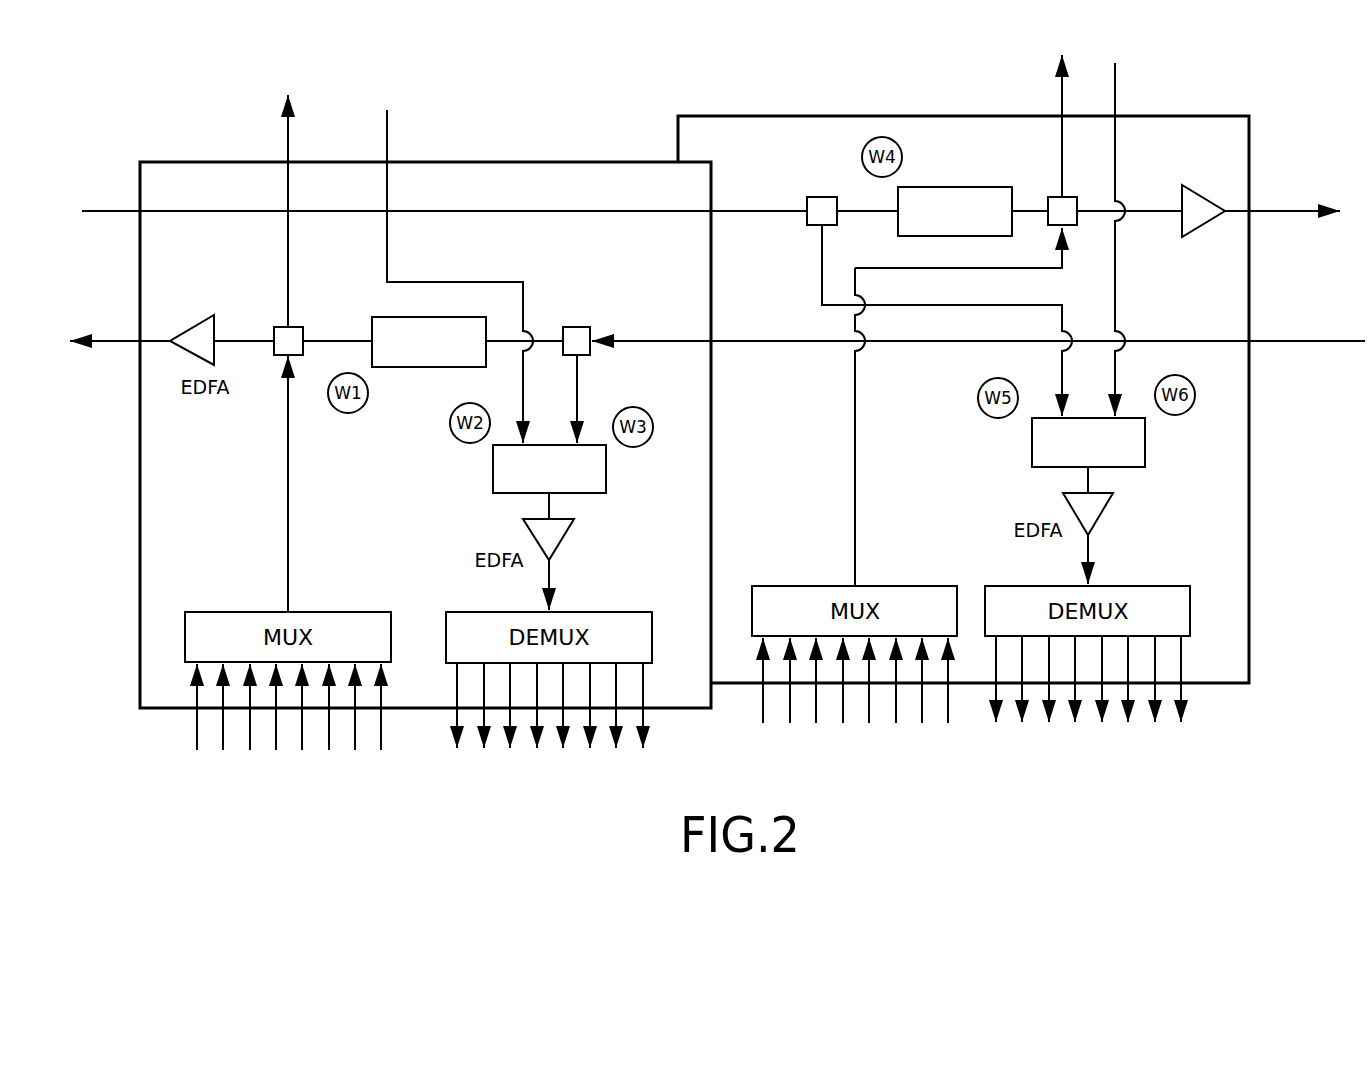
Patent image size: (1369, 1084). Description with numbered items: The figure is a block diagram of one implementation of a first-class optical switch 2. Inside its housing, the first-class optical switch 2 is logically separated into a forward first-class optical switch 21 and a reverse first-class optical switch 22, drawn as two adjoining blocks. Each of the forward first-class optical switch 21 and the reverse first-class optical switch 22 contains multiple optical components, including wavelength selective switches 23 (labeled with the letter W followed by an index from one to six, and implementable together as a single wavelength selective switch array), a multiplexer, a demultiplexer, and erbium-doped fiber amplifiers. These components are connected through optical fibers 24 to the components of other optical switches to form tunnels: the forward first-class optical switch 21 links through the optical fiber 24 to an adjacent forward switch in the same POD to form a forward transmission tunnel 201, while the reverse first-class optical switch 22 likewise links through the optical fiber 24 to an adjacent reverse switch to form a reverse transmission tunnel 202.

The first-class optical switch 2 is at (694, 370).
The forward first-class optical switch 21 is at (778, 130).
The reverse first-class optical switch 22 is at (505, 173).
The wavelength selective switch 23 is at (398, 367).
The optical fiber 24 is at (287, 142).
The forward transmission tunnel 201 is at (1273, 205).
The reverse transmission tunnel 202 is at (1273, 335).